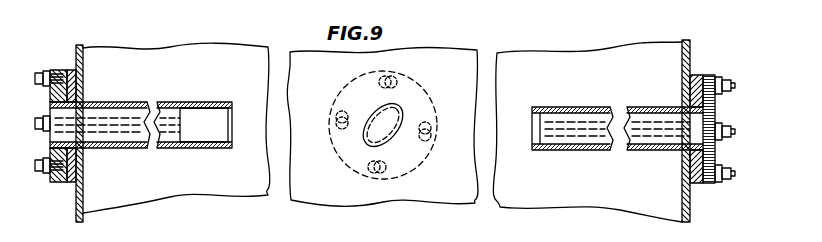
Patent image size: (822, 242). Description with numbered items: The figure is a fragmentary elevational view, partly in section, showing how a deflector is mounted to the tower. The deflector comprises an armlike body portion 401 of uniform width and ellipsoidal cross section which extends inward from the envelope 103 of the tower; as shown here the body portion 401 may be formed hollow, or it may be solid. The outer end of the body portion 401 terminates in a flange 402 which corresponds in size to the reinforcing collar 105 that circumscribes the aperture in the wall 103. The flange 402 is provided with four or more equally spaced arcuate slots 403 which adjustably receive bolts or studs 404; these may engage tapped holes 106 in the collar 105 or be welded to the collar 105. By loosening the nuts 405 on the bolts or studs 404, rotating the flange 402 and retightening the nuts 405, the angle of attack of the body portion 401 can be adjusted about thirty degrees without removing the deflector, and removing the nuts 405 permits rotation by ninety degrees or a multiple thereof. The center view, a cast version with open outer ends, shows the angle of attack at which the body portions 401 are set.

The envelope 103 is at (690, 43).
The reinforcing collar 105 is at (72, 70).
The tapped hole 106 is at (85, 157).
The body portion 401 is at (213, 102).
The flange 402 is at (63, 70).
The arcuate slot 403 is at (427, 158).
The bolt or stud 404 is at (37, 78).
The nut 405 is at (47, 89).